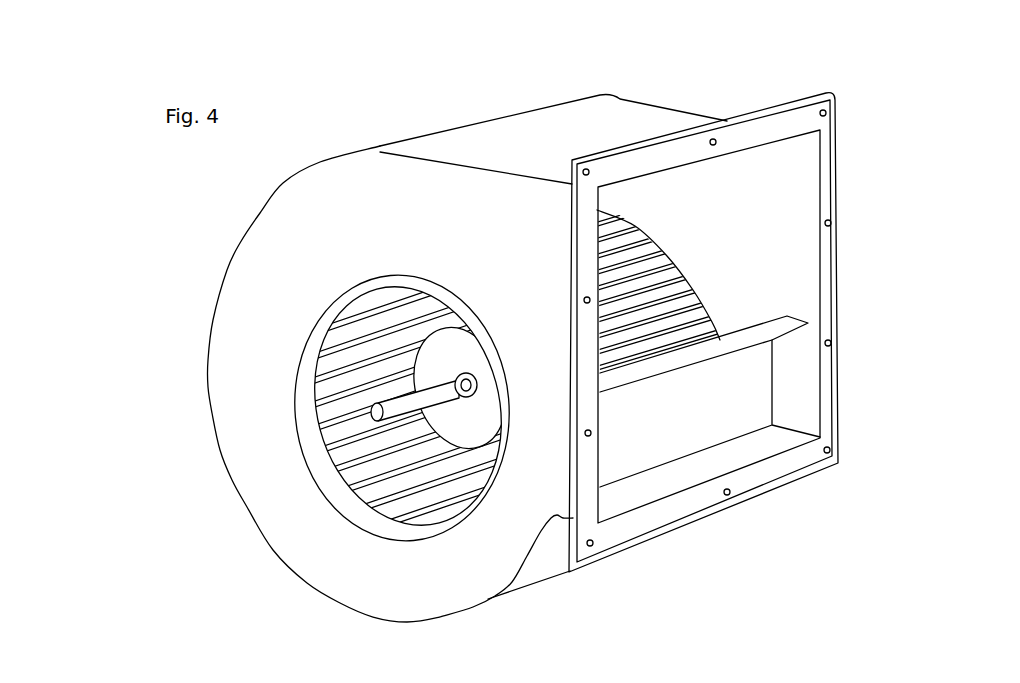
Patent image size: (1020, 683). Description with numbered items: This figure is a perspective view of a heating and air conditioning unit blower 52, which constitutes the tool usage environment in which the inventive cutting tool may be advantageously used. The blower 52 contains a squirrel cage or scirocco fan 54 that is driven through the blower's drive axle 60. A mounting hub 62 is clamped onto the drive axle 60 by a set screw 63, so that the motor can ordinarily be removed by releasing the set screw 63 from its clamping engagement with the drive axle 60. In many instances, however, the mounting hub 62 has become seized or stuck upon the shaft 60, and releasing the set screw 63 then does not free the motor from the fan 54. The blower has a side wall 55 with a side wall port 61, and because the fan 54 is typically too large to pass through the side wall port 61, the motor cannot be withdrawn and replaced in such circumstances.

The heating and air conditioning unit blower 52 is at (672, 93).
The squirrel cage or scirocco fan 54 is at (650, 300).
The side wall 55 is at (238, 323).
The drive axle 60 is at (377, 412).
The side wall port 61 is at (327, 455).
The mounting hub 62 is at (462, 385).
The set screw 63 is at (465, 393).